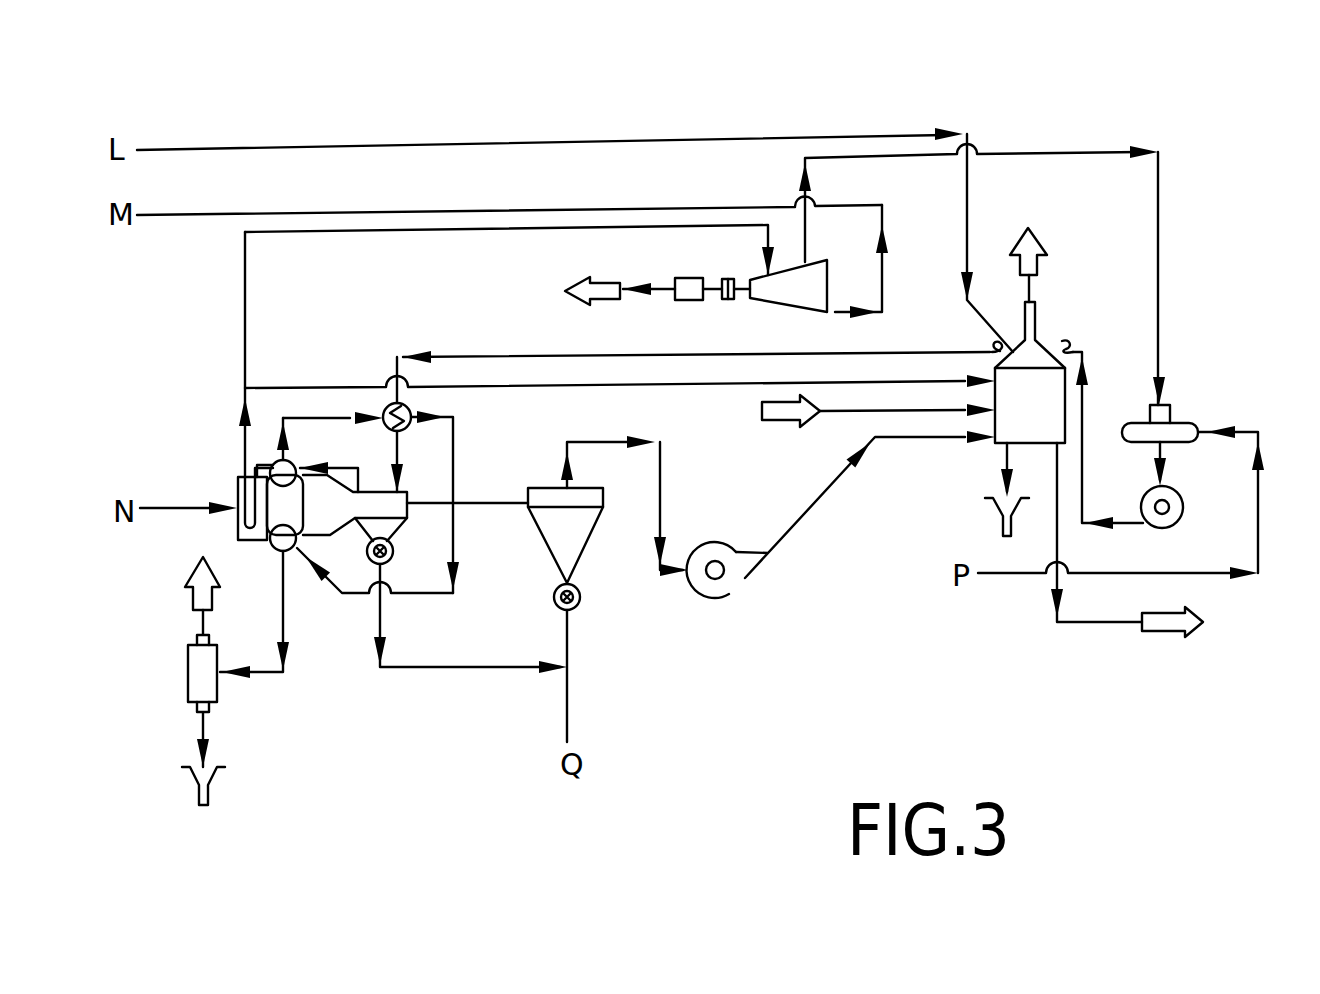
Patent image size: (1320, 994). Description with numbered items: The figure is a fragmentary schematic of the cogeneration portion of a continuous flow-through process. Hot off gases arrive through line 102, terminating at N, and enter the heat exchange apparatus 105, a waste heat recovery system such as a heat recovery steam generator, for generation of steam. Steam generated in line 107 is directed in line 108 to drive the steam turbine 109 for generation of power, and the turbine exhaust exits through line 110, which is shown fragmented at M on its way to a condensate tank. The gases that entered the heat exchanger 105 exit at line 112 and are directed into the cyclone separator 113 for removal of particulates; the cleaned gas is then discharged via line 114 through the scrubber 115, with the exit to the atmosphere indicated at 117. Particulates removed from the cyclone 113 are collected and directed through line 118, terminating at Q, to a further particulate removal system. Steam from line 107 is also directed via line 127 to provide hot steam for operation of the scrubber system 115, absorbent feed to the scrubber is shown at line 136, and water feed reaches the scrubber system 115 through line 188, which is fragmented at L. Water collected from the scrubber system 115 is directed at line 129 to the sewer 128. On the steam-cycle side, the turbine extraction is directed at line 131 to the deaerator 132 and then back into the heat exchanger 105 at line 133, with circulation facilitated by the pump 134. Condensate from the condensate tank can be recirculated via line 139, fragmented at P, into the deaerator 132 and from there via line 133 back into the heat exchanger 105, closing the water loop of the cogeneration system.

The line 102 is at (172, 512).
The heat exchange apparatus 105 is at (237, 483).
The line 107 is at (240, 443).
The line 108 is at (243, 342).
The turbine 109 is at (785, 305).
The line 110 is at (887, 265).
The line 112 is at (483, 500).
The cyclone separator 113 is at (587, 543).
The line 114 is at (663, 488).
The scrubber 115 is at (995, 447).
The exit to the atmosphere 117 is at (1030, 288).
The line 118 is at (570, 713).
The line 127 is at (295, 388).
The sewer 128 is at (997, 527).
The line 129 is at (1002, 468).
The line 131 is at (995, 152).
The deaerator 132 is at (1188, 420).
The line 133 is at (1100, 390).
The pump 134 is at (1183, 505).
The line 136 is at (830, 435).
The line 139 is at (1015, 577).
The line 188 is at (592, 140).